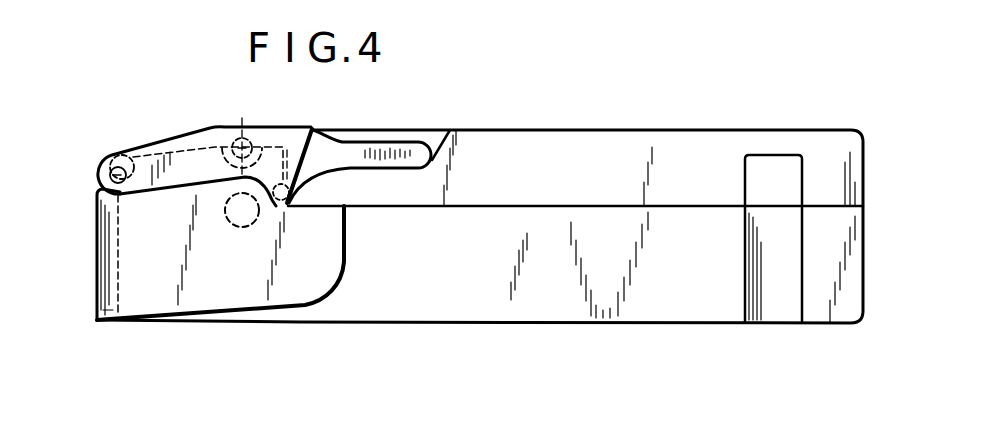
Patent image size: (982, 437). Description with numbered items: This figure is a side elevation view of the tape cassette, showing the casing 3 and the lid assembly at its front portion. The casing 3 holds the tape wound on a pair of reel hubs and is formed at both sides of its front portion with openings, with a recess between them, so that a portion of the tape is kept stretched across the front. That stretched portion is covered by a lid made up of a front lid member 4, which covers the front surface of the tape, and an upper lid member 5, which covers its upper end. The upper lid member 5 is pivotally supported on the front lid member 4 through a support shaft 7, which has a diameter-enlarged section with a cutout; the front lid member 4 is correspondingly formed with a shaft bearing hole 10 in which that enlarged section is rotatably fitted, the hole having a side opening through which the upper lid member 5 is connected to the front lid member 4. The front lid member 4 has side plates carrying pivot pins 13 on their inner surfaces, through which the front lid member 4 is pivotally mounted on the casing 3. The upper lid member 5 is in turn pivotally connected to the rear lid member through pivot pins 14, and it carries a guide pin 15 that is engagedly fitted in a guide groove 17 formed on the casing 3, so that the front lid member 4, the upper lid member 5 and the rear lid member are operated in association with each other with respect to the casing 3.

The casing 3 is at (612, 130).
The front lid member 4 is at (95, 242).
The upper lid member 5 is at (176, 138).
The support shaft 7 is at (108, 172).
The shaft bearing hole 10 is at (118, 158).
The pivot pins 13 is at (246, 228).
The pivot pins 14 is at (245, 127).
The guide pin 15 is at (292, 208).
The guide groove 17 is at (392, 143).